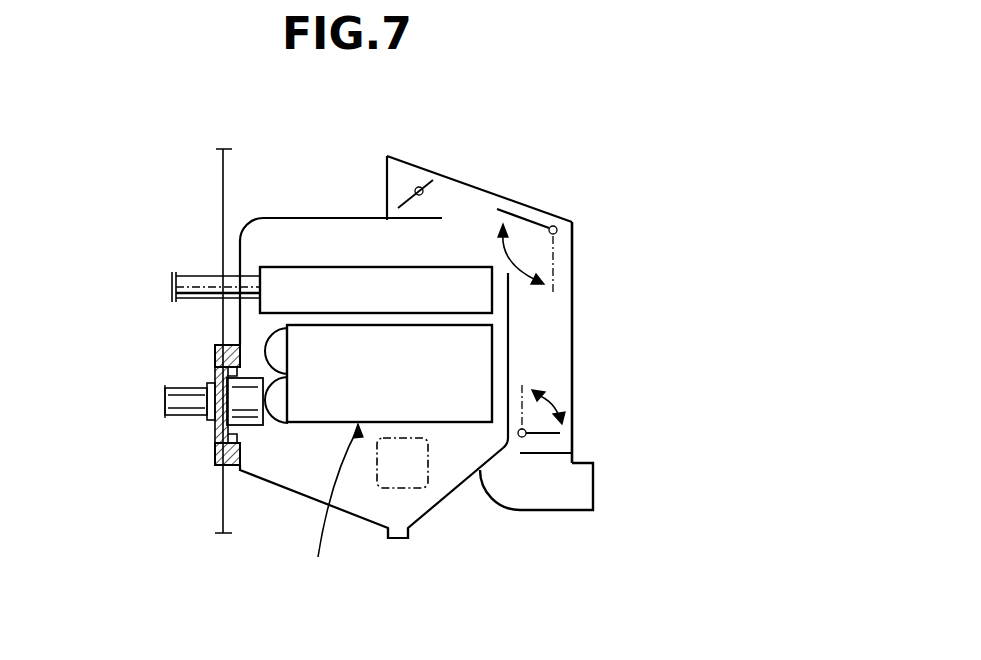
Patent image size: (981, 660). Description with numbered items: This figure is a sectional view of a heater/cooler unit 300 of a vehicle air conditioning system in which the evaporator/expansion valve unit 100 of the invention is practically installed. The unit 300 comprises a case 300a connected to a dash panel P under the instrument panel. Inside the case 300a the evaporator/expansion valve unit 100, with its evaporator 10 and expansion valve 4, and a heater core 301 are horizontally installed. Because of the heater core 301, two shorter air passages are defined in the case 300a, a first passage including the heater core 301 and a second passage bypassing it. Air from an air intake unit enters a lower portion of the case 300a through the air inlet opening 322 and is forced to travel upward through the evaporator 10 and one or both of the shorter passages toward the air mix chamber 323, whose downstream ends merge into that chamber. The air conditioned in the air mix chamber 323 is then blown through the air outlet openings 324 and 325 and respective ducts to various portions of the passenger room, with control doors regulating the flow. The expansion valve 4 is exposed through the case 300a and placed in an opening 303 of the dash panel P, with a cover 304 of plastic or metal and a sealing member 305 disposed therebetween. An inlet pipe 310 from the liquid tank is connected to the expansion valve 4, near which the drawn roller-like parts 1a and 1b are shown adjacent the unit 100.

The heater/cooler unit 300 is at (658, 135).
The air outlet opening 324 is at (386, 190).
The air mix chamber 323 is at (430, 242).
The heater core 301 is at (348, 280).
The evaporator 10 is at (458, 423).
The roller shaft 1b is at (270, 342).
The roller 1a is at (272, 420).
The dash panel P is at (222, 505).
The sealing member 305 is at (215, 350).
The opening 303 is at (212, 452).
The inlet pipe 310 is at (167, 403).
The cover 304 is at (217, 433).
The expansion valve 4 is at (247, 427).
The evaporator/expansion valve unit 100 is at (331, 508).
The air inlet opening 322 is at (387, 488).
The case 300a is at (428, 515).
The air outlet opening 325 is at (575, 490).